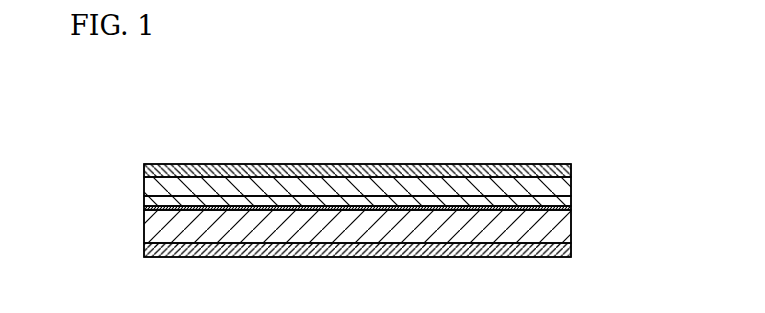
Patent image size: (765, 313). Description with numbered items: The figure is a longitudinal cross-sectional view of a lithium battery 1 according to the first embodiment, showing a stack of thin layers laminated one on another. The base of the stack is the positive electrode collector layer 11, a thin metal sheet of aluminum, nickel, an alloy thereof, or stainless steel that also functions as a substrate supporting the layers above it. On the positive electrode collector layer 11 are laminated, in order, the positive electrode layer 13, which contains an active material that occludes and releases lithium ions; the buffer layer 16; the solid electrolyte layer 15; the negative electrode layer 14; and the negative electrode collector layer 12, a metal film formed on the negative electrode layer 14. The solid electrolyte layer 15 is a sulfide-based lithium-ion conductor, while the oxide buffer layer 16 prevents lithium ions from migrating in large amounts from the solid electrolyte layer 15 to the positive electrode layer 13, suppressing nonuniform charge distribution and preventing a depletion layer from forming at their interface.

The lithium battery 1 is at (86, 131).
The positive electrode collector layer 11 is at (493, 257).
The negative electrode collector layer 12 is at (282, 164).
The positive electrode layer 13 is at (571, 223).
The negative electrode layer 14 is at (149, 190).
The solid electrolyte layer 15 is at (152, 201).
The buffer layer 16 is at (571, 208).